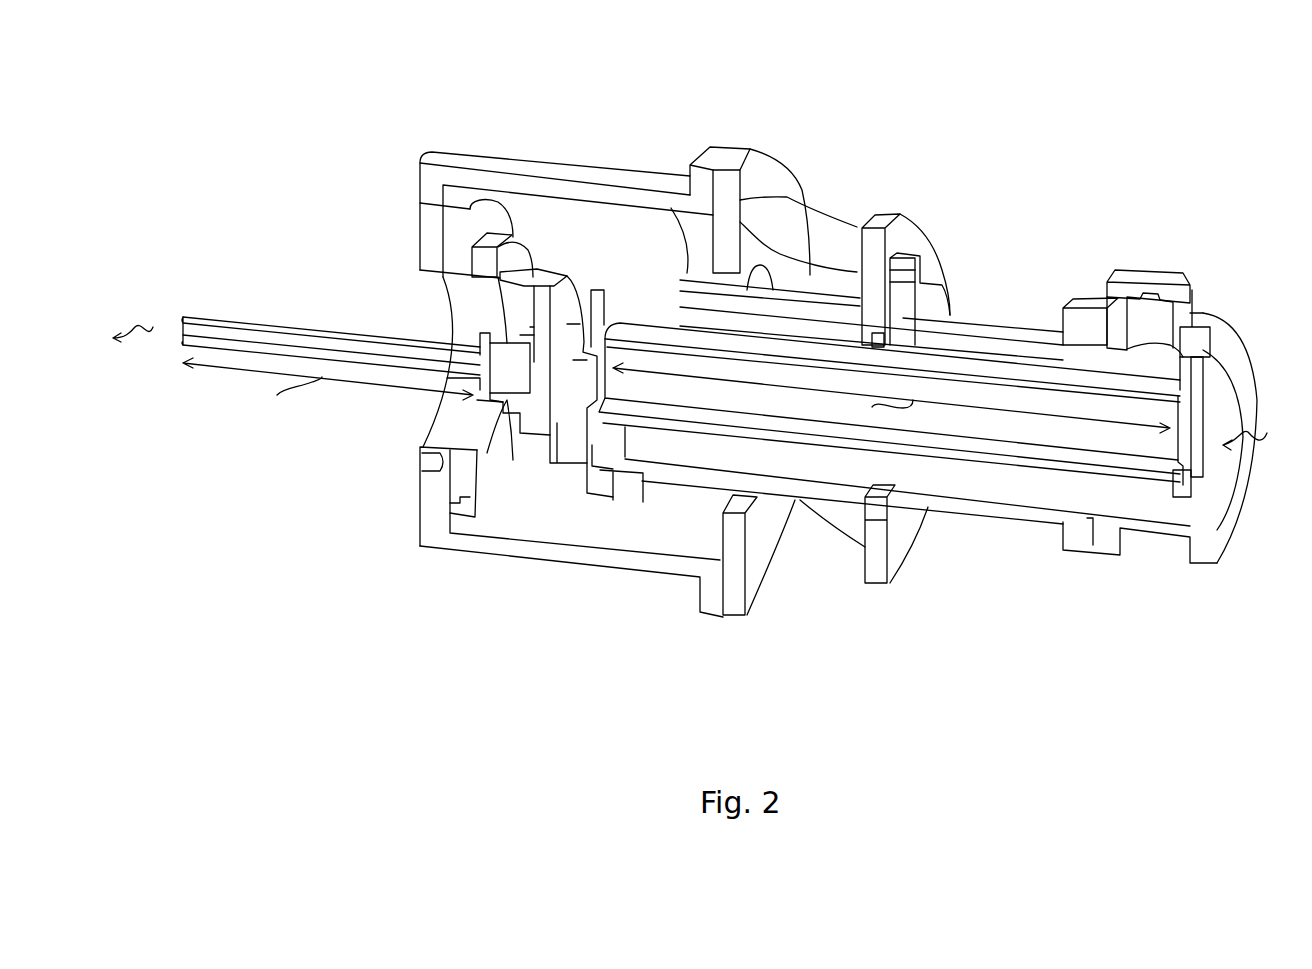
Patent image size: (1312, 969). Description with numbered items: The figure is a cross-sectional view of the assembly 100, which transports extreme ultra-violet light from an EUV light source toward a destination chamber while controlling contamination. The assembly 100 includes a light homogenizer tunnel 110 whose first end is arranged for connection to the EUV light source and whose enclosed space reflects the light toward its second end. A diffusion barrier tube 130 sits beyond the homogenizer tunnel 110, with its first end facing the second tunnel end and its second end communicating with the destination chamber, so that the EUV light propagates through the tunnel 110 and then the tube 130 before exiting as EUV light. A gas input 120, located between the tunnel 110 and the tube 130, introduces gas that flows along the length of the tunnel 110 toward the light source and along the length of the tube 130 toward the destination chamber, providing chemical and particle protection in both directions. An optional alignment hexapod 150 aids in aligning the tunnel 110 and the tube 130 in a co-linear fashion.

The assembly 100 is at (1013, 87).
The light homogenizer tunnel 110 is at (722, 437).
The gas input 120 is at (513, 462).
The diffusion barrier tube 130 is at (317, 328).
The alignment hexapod 150 is at (818, 230).